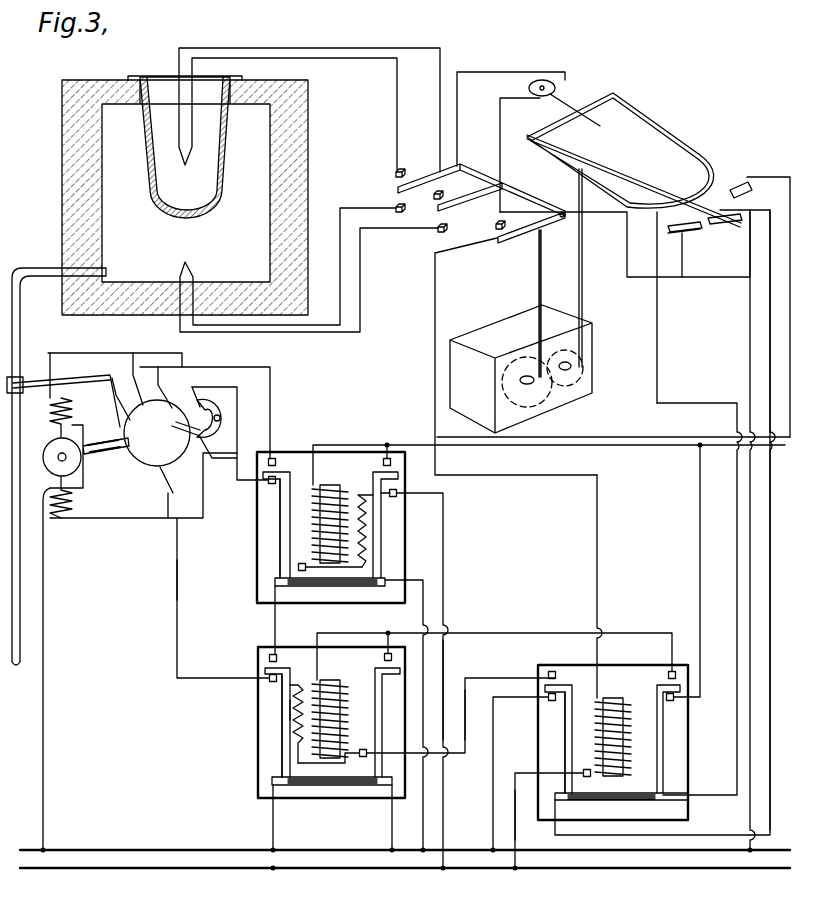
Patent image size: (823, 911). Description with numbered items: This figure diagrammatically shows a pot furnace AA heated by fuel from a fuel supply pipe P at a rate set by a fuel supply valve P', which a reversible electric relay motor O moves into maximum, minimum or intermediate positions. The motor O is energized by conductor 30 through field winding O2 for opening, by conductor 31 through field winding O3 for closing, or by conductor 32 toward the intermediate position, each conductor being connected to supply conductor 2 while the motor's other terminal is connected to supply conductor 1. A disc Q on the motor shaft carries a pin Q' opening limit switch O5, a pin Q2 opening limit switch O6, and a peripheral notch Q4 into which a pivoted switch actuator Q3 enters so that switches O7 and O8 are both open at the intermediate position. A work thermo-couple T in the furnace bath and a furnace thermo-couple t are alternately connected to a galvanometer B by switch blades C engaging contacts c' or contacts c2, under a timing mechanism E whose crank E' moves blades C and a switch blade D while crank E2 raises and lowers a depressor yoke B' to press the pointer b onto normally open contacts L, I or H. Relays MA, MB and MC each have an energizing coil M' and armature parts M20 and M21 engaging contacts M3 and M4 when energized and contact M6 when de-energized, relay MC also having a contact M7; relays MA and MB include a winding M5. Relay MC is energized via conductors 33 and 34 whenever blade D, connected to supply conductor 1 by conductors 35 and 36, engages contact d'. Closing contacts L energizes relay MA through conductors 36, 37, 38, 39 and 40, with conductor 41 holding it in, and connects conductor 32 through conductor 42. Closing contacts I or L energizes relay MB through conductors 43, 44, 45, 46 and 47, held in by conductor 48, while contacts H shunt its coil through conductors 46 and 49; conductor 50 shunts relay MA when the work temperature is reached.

The pot furnace AA is at (62, 176).
The work thermo-couple T is at (180, 160).
The furnace thermo-couple t is at (194, 262).
The fuel supply pipe P is at (59, 450).
The fuel supply valve P' is at (63, 377).
The reversible electric relay motor O is at (44, 455).
The field winding O2 is at (52, 406).
The field winding O3 is at (74, 503).
The limit switch O5 is at (164, 488).
The limit switch O6 is at (128, 390).
The switch O7 is at (209, 462).
The switch O8 is at (196, 384).
The disc Q is at (158, 515).
The pin Q' is at (186, 455).
The pin Q2 is at (176, 395).
The switch actuator Q3 is at (222, 400).
The peripheral notch Q4 is at (148, 400).
The conductor 30 is at (270, 380).
The conductor 31 is at (177, 548).
The conductor 32 is at (237, 418).
The contacts c' is at (406, 155).
The contacts c2 is at (400, 214).
The switch blades C is at (466, 180).
The contact d' is at (503, 166).
The switch blade D is at (512, 240).
The galvanometer B is at (565, 94).
The depressor yoke B' is at (620, 149).
The deflecting pointer b is at (650, 156).
The conductor 35 is at (604, 212).
The contacts H is at (738, 184).
The contacts I is at (728, 226).
The contacts L is at (686, 240).
The conductor 34 is at (435, 334).
The clock meter or timing mechanism E is at (535, 369).
The rotating crank E' is at (546, 329).
The crank E2 is at (572, 366).
The conductor 36 is at (770, 310).
The conductor 37 is at (658, 332).
The conductor 44 is at (770, 350).
The conductor 45 is at (737, 570).
The conductor 46 is at (658, 446).
The conductor 49 is at (650, 437).
The relay MA is at (272, 744).
The relay MB is at (275, 556).
The relay MC is at (680, 750).
The energizing coil M' is at (460, 663).
The contact M3 is at (276, 458).
The contact M4 is at (392, 466).
The winding M5 is at (368, 522).
The contact M6 is at (270, 486).
The contact M7 is at (674, 703).
The armature part M20 is at (282, 527).
The armature part M21 is at (378, 557).
The conductor 38 is at (550, 632).
The conductor 39 is at (294, 670).
The conductor 40 is at (273, 822).
The conductor 41 is at (392, 816).
The conductor 42 is at (275, 614).
The conductor 43 is at (493, 790).
The conductor 47 is at (443, 574).
The conductor 48 is at (444, 660).
The conductor 50 is at (478, 680).
The conductor 33 is at (515, 816).
The supply conductor 1 is at (84, 850).
The supply conductor 2 is at (92, 870).